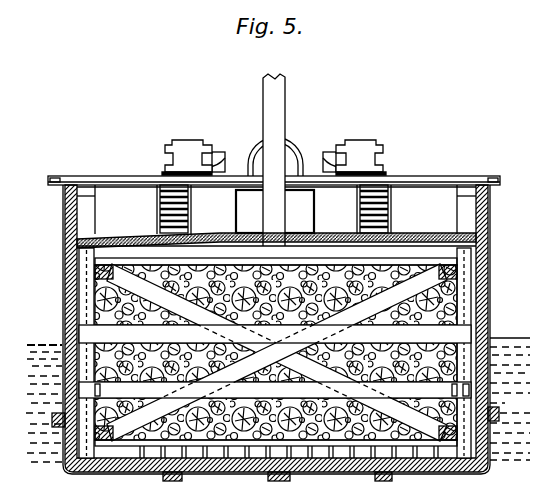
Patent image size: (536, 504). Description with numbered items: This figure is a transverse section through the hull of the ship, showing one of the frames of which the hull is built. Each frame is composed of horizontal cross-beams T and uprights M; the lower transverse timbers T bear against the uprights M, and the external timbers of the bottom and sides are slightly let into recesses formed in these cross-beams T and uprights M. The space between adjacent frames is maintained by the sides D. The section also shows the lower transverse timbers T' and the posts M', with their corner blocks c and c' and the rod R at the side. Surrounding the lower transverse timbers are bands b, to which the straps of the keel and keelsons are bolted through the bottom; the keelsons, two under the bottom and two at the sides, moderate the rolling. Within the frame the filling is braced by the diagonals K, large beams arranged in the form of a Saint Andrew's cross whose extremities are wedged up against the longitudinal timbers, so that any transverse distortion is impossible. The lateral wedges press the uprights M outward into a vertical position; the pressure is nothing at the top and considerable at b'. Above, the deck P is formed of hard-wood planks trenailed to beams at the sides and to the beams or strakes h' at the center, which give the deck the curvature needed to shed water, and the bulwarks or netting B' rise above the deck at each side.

The bulwarks or netting B' is at (270, 329).
The deck P is at (285, 210).
The beams or strakes h' is at (274, 168).
The cross-beams T is at (276, 288).
The lower cross beam T' is at (275, 390).
The corner block c is at (274, 354).
The upper corner block c' is at (273, 328).
The uprights M is at (273, 353).
The vertical post M' is at (462, 353).
The bands b is at (101, 390).
The point of considerable pressure b' is at (449, 389).
The rod R is at (466, 390).
The diagonals K is at (276, 352).
The sides D is at (278, 333).